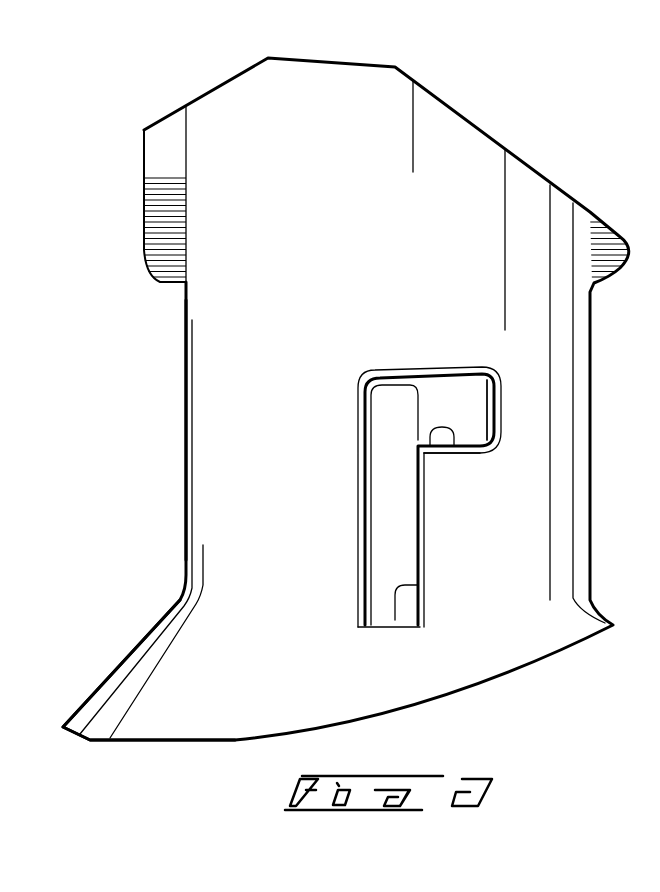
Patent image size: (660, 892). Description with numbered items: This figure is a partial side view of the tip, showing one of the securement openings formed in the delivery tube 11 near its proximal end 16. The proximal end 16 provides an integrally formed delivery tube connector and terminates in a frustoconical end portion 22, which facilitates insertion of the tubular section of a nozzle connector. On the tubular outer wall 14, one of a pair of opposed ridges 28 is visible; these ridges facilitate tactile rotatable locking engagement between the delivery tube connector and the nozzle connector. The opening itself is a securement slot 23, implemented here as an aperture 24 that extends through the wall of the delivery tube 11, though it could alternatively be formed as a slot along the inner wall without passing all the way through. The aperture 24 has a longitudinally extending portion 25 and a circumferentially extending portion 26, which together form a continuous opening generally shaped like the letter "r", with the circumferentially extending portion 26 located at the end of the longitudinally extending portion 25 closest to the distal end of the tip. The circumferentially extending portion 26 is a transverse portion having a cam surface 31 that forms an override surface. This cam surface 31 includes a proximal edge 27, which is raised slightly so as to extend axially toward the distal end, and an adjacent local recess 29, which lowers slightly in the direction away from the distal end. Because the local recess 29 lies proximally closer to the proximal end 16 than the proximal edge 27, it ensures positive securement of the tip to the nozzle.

The delivery tube 11 is at (338, 221).
The tubular outer wall 14 is at (230, 405).
The proximal end 16 is at (560, 135).
The frustoconical end portion 22 is at (122, 660).
The securement slot 23 is at (395, 630).
The aperture 24 is at (392, 402).
The longitudinally extending portion 25 is at (335, 372).
The circumferentially extending portion 26 is at (500, 352).
The proximal edge 27 is at (452, 455).
The ridges 28 is at (143, 165).
The local recess 29 is at (474, 436).
The cam surface 31 is at (470, 452).